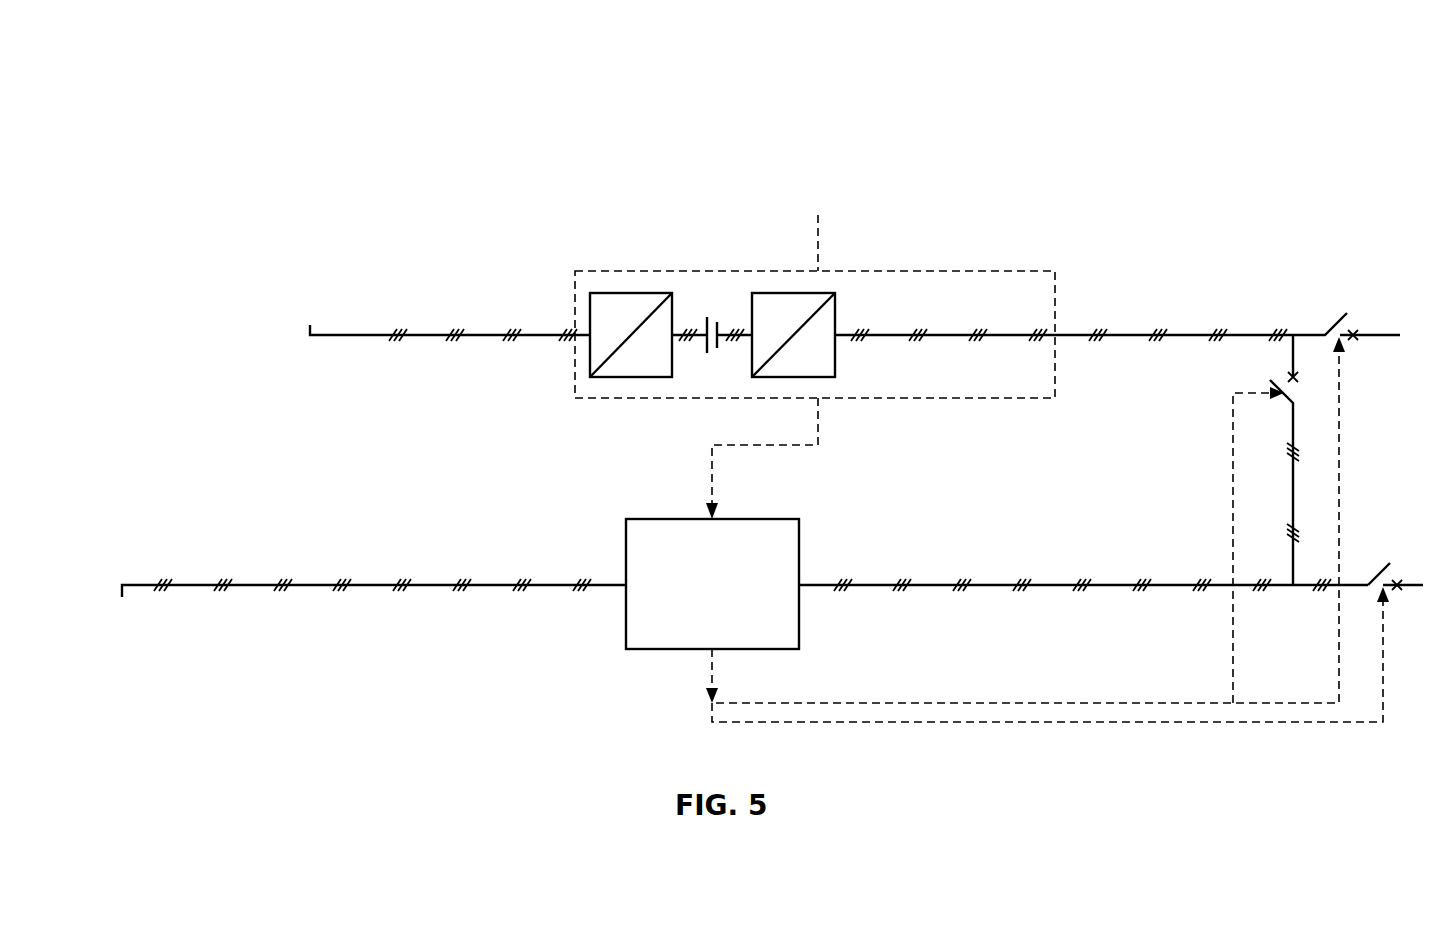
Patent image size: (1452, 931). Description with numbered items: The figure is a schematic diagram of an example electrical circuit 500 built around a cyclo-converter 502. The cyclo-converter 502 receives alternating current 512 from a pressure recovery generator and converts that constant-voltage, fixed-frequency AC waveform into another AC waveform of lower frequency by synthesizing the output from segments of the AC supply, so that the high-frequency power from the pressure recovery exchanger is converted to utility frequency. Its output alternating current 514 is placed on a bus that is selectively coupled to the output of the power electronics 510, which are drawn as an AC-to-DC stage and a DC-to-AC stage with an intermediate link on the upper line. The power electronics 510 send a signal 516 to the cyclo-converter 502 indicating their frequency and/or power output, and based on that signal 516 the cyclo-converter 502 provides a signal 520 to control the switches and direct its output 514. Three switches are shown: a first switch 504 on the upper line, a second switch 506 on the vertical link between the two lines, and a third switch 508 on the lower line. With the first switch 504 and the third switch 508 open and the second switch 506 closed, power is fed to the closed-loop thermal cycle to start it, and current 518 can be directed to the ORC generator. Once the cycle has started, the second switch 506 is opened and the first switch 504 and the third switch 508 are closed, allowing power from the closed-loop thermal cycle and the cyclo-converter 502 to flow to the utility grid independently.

The electrical circuit 500 is at (277, 106).
The cyclo-converter 502 is at (674, 518).
The switch S1 504 is at (1331, 302).
The switch S2 506 is at (1262, 378).
The switch S3 508 is at (1371, 552).
The power electronics 510 is at (1024, 258).
The alternating current 512 is at (420, 582).
The alternating current 514 is at (992, 582).
The signal 516 is at (738, 445).
The current 518 is at (458, 328).
The signal 520 is at (985, 680).